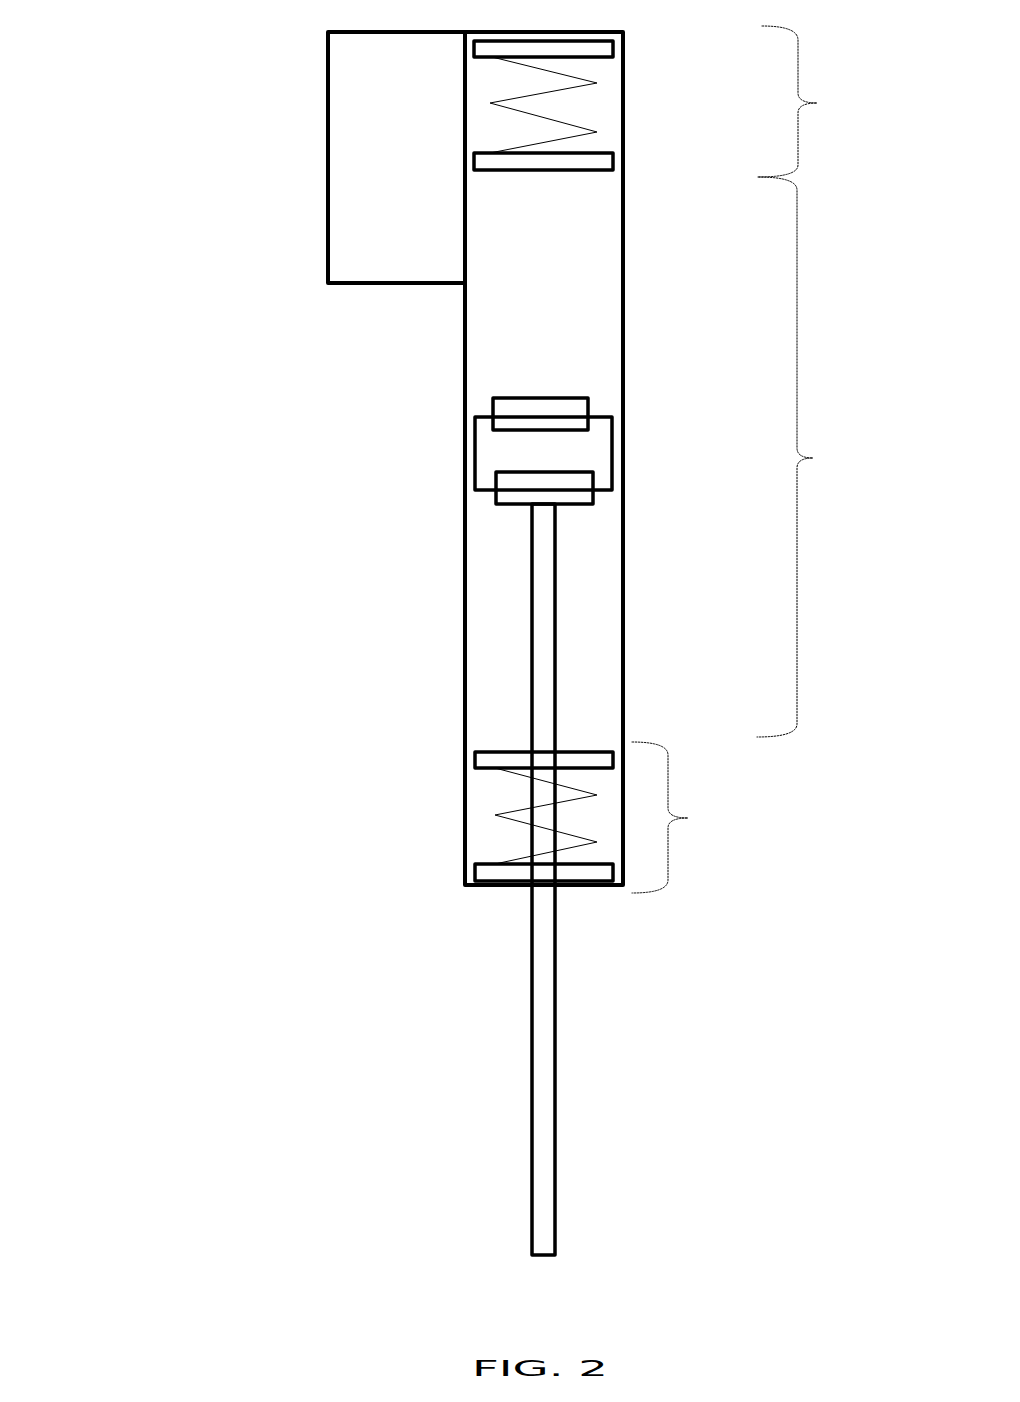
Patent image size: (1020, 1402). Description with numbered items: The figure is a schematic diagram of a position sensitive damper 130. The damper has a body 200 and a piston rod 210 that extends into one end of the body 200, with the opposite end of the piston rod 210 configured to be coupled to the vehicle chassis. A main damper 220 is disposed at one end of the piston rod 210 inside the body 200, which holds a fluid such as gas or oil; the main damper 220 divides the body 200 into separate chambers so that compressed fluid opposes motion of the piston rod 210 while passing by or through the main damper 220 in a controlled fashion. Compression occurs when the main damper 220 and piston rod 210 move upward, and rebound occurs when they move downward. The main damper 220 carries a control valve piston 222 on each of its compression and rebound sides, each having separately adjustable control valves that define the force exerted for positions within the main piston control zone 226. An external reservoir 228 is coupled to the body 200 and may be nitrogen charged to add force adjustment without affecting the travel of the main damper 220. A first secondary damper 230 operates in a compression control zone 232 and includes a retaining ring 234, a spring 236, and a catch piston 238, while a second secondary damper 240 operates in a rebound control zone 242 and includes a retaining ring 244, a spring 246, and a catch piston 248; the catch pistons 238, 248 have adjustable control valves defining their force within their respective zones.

The position sensitive damper 130 is at (463, 640).
The body 200 is at (480, 458).
The piston rod 210 is at (600, 879).
The main damper 220 is at (597, 444).
The control valve piston 222 is at (601, 461).
The main piston control zone 226 is at (814, 457).
The external reservoir 228 is at (334, 175).
The first secondary damper 230 is at (603, 150).
The compression control zone 232 is at (818, 101).
The retaining ring 234 is at (603, 43).
The spring 236 is at (597, 105).
The catch piston 238 is at (597, 141).
The second secondary damper 240 is at (483, 818).
The rebound control zone 242 is at (688, 817).
The retaining ring 244 is at (520, 901).
The spring 246 is at (478, 816).
The catch piston 248 is at (488, 733).